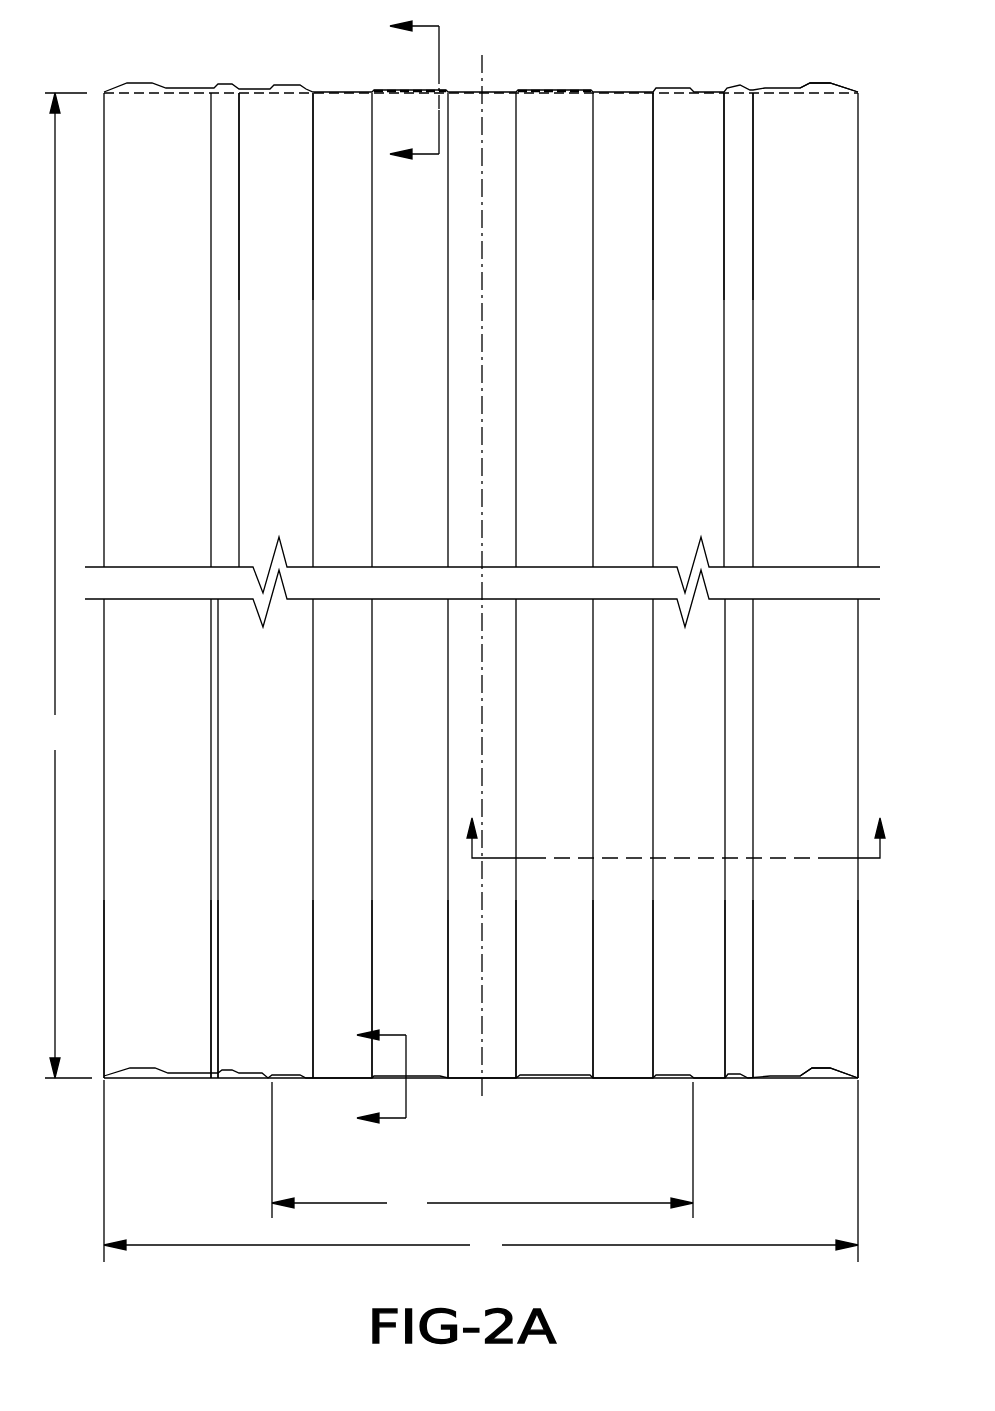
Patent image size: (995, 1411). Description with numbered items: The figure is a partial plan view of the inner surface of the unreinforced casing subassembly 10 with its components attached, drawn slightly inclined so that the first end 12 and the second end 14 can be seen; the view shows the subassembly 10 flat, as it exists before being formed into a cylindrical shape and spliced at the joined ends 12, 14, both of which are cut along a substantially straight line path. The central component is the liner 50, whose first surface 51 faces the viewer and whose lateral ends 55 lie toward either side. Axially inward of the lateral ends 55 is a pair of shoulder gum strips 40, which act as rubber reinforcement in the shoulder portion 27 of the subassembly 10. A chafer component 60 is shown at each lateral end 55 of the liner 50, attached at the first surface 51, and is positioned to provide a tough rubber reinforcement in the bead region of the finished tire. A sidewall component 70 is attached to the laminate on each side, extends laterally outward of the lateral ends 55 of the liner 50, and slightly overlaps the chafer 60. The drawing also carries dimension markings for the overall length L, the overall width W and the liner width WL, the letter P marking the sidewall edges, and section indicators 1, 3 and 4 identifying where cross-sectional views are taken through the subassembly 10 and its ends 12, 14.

The casing subassembly 10 is at (230, 50).
The first end 12 is at (755, 1100).
The second end 14 is at (765, 68).
The shoulder portion 27 is at (283, 112).
The shoulder gum strip 40 is at (430, 1078).
The liner 50 is at (463, 1050).
The first surface 51 is at (500, 1050).
The lateral ends 55 is at (270, 1080).
The chafer component 60 is at (258, 1044).
The sidewall component 70 is at (142, 1072).
The perimeter P is at (827, 90).
The length L is at (68, 585).
The width W is at (481, 1171).
The inner width WL is at (482, 1152).
The section line 1 is at (675, 825).
The section line 3 is at (405, 102).
The section line 4 is at (372, 1077).